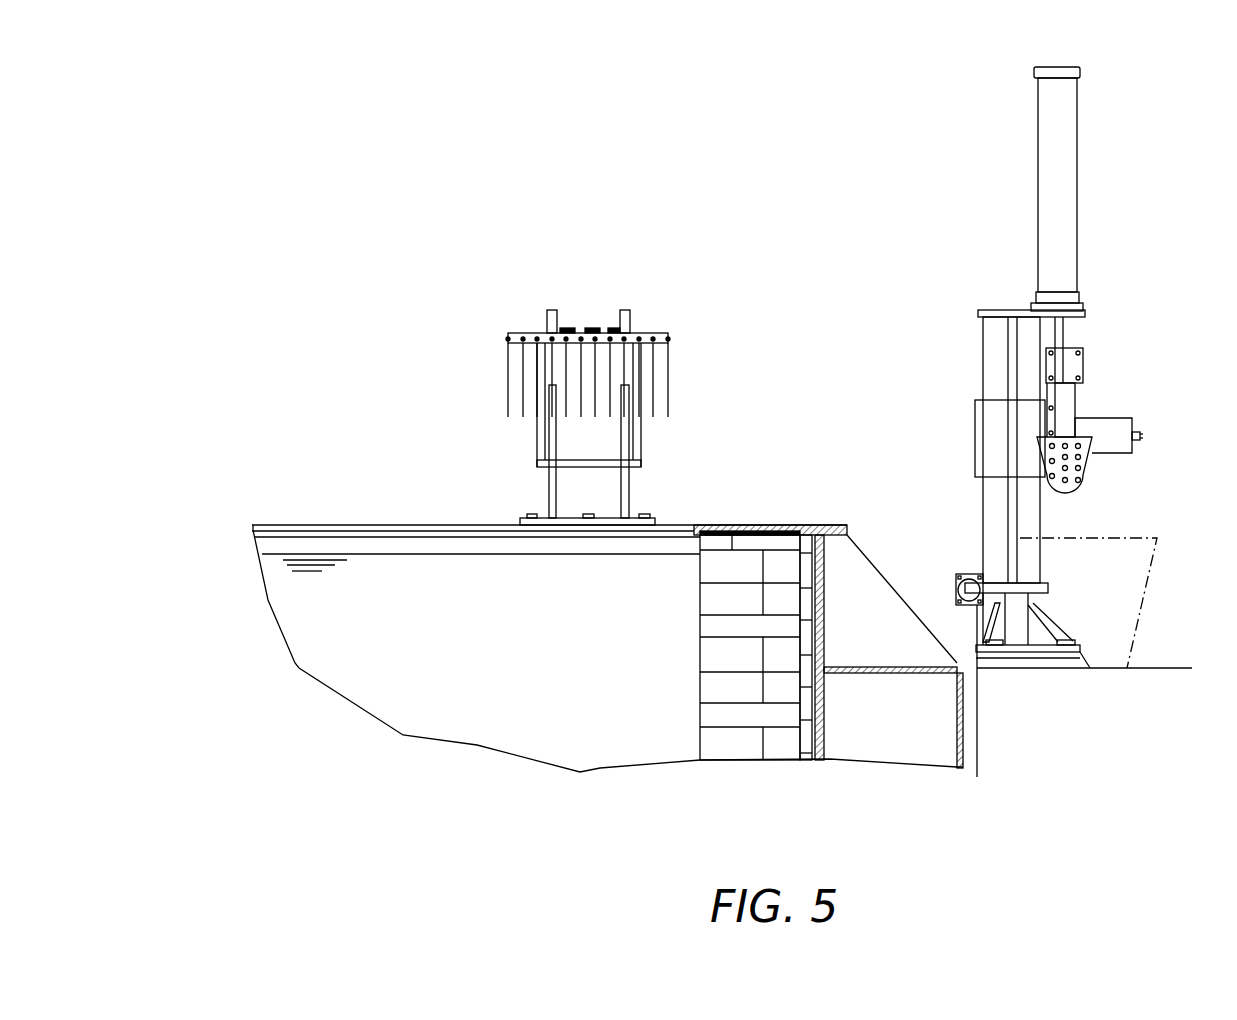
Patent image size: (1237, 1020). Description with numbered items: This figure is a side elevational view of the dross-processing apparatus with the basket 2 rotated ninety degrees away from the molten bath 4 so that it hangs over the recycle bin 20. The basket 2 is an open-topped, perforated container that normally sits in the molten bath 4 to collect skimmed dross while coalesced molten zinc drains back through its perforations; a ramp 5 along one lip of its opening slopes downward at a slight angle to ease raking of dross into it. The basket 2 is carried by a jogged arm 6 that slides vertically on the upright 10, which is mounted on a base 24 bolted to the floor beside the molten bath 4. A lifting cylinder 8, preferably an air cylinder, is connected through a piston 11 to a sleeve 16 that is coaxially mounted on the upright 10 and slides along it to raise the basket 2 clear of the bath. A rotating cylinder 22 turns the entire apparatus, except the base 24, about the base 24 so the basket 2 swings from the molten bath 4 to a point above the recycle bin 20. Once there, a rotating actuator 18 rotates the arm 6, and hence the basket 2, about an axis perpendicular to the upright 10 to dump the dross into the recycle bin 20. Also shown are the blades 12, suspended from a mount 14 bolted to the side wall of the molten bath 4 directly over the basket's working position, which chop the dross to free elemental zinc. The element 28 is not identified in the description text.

The basket 2 is at (1062, 492).
The molten bath 4 is at (556, 660).
The ramp 5 is at (1105, 453).
The arm 6 is at (1062, 417).
The lifting cylinder 8 is at (1063, 187).
The upright 10 is at (990, 348).
The piston 11 is at (1062, 330).
The blades 12 is at (508, 390).
The mount 14 is at (548, 482).
The sleeve 16 is at (995, 432).
The rotating actuator 18 is at (1115, 430).
The recycle bin 20 is at (1128, 607).
The rotating cylinder 22 is at (975, 580).
The base 24 is at (1040, 647).
The pipe 28 is at (1012, 322).